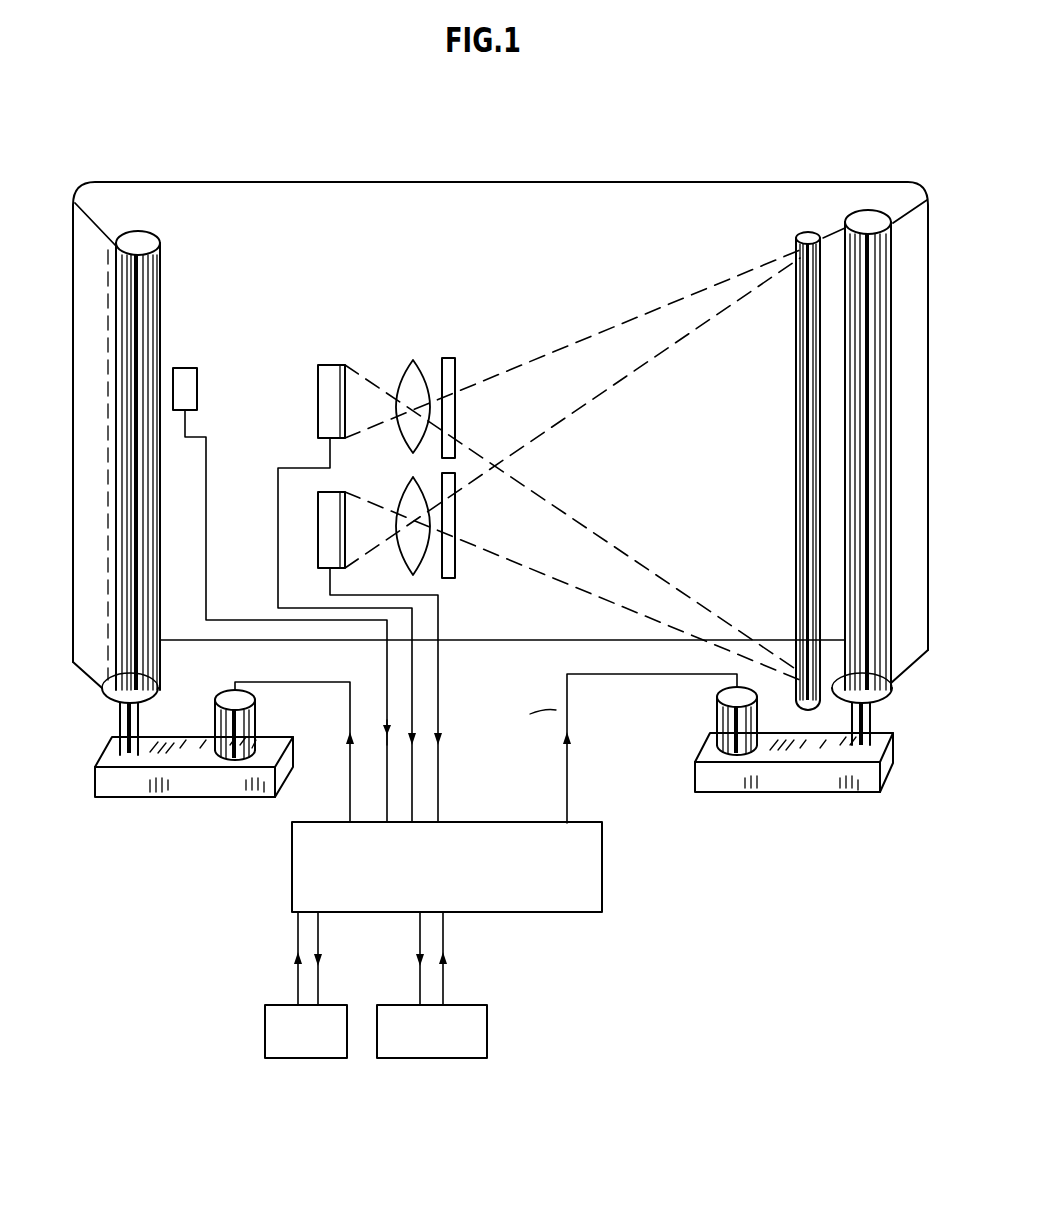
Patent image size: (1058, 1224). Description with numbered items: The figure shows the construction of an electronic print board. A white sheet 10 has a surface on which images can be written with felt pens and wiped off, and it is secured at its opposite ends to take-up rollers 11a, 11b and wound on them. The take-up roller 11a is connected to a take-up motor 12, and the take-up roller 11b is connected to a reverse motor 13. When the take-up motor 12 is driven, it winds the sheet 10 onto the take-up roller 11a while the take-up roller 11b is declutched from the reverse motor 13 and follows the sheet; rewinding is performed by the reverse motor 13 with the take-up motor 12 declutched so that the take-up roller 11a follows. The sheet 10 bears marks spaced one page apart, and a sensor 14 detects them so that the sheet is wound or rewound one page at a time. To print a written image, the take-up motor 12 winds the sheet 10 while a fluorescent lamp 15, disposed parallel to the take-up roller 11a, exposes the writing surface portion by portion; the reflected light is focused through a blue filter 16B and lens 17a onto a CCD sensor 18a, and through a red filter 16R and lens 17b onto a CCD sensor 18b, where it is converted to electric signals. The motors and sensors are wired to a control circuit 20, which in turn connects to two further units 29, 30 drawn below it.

The white sheet 10 is at (607, 195).
The take-up roller 11a is at (892, 695).
The take-up roller 11b is at (102, 697).
The take-up motor 12 is at (723, 757).
The reverse motor 13 is at (215, 753).
The sensor 14 is at (186, 368).
The fluorescent lamp 15 is at (798, 297).
The blue filter 16B is at (455, 358).
The red filter 16R is at (453, 577).
The lens 17a is at (405, 360).
The lens 17b is at (408, 500).
The CCD sensor 18a is at (325, 365).
The CCD sensor 18b is at (330, 560).
The control circuit 20 is at (517, 913).
The input device 29 is at (265, 1035).
The display unit 30 is at (478, 1033).